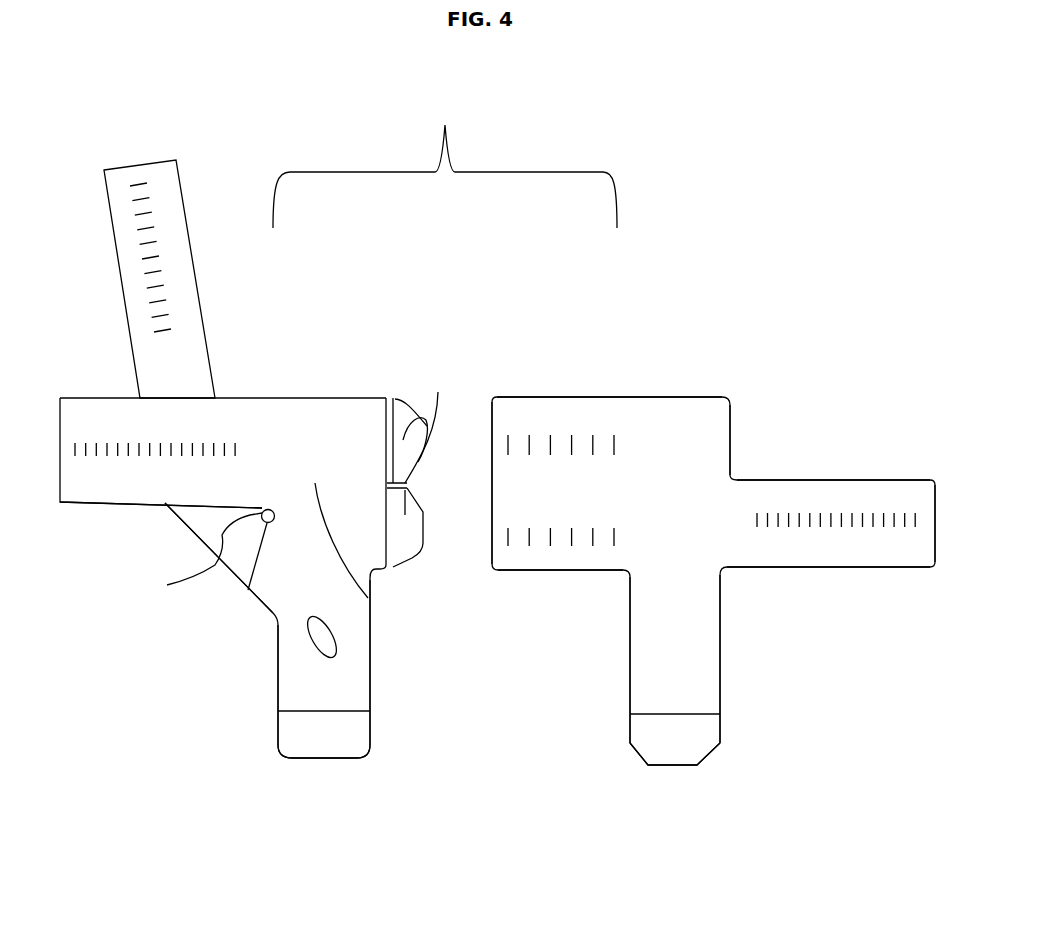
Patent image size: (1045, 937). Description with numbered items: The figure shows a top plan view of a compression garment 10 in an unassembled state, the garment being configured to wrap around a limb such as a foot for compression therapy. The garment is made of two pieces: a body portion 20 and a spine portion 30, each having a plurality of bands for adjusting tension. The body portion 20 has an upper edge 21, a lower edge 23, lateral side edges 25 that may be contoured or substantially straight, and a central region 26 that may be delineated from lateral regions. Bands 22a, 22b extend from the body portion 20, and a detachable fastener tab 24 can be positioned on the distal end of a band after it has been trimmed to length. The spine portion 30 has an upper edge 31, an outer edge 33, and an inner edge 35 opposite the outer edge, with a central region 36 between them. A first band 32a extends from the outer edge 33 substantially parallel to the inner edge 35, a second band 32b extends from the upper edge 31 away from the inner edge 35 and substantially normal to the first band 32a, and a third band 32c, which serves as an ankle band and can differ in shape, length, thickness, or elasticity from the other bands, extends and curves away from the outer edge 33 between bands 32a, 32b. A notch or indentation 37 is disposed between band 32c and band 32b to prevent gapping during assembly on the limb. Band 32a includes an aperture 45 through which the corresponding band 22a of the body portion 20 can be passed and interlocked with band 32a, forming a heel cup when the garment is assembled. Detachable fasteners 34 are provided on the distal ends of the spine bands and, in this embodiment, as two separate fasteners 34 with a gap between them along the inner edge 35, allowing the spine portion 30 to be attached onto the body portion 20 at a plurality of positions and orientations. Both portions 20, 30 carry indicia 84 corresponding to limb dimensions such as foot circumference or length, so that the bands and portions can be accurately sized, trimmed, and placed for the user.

The compression garment 10 is at (434, 110).
The body portion 20 is at (707, 332).
The upper edge of the body portion 21 is at (571, 397).
The band of the body portion 22a is at (660, 658).
The band of the body portion 22b is at (772, 560).
The lower edge of the body portion 23 is at (628, 595).
The detachable fastener tab 24 is at (668, 755).
The lateral side edges of the body portion 25 is at (492, 540).
The central region of the body portion 26 is at (643, 447).
The spine portion 30 is at (290, 333).
The upper edge of the spine portion 31 is at (273, 398).
The first band 32a is at (297, 690).
The second band 32b is at (143, 488).
The third band 32c is at (163, 378).
The outer edge of the spine portion 33 is at (265, 605).
The detachable fastener 34 is at (436, 398).
The inner edge of the spine portion 35 is at (405, 410).
The central region of the spine portion 36 is at (368, 598).
The notch or indentation 37 is at (190, 555).
The aperture 45 is at (335, 647).
The indicia 84 is at (140, 250).